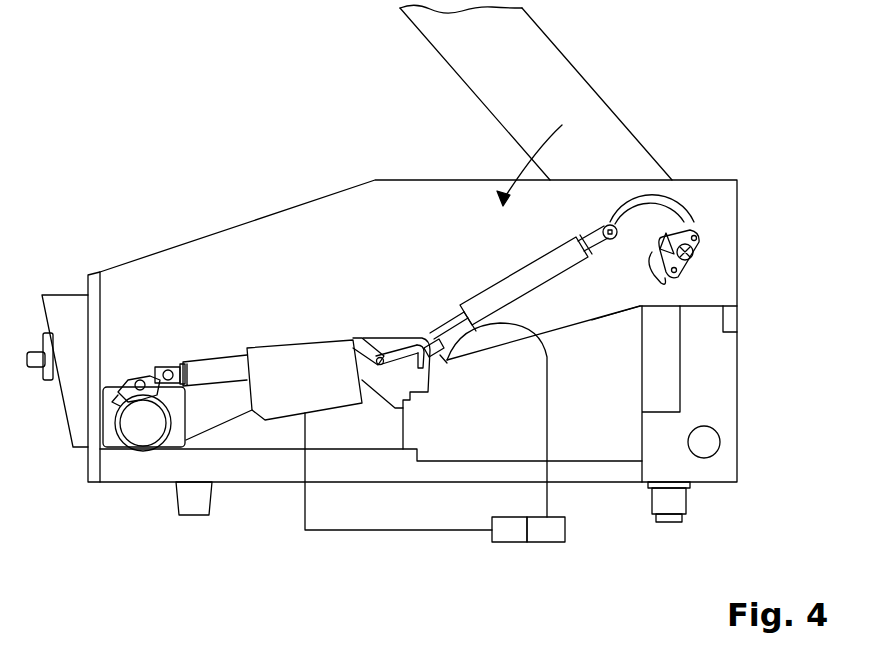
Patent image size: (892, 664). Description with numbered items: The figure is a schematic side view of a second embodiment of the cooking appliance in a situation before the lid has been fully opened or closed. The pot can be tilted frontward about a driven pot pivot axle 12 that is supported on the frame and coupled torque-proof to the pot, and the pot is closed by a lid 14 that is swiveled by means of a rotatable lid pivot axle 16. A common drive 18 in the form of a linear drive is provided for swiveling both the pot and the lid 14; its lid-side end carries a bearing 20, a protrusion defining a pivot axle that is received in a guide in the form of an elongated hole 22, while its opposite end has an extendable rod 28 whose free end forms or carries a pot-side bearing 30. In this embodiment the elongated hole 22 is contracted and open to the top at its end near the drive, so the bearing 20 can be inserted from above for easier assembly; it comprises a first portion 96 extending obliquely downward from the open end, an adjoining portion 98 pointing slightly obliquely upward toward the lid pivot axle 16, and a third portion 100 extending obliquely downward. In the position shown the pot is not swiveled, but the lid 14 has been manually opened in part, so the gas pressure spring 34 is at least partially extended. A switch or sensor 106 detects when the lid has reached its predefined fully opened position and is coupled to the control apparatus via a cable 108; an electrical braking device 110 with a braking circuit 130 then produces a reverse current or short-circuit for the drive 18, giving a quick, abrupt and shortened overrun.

The pot pivot axle 12 is at (148, 435).
The lid 14 is at (572, 78).
The lid pivot axle 16 is at (700, 252).
The common drive 18 is at (282, 362).
The bearing 20 is at (376, 337).
The elongated hole 22 is at (404, 365).
The extendable rod 28 is at (178, 367).
The pot-side bearing 30 is at (167, 367).
The gas pressure spring 34 is at (510, 290).
The first portion 96 is at (365, 342).
The adjoining portion 98 is at (405, 333).
The third portion 100 is at (430, 375).
The switch or sensor 106 is at (449, 359).
The cable 108 is at (547, 492).
The electrical braking device 110 is at (547, 545).
The braking circuit 130 is at (500, 545).